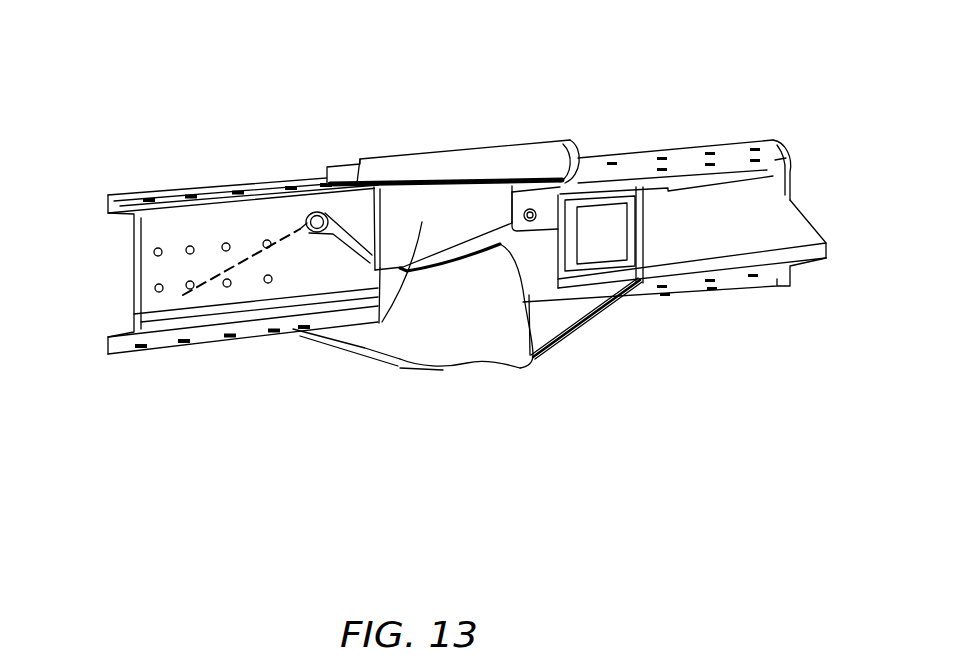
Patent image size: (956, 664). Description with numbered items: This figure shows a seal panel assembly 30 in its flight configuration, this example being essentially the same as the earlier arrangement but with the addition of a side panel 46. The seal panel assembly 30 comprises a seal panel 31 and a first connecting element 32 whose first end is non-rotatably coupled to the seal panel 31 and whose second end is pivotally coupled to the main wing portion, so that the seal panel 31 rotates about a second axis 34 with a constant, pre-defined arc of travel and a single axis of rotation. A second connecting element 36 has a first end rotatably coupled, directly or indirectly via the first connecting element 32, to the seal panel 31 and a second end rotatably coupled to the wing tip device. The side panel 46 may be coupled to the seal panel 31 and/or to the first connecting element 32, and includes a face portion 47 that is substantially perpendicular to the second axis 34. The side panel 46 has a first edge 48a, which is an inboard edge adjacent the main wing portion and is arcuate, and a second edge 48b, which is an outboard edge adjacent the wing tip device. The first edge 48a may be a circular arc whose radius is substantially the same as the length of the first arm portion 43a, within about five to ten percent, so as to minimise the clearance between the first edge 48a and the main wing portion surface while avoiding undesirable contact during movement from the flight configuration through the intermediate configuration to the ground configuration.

The seal panel assembly 30 is at (466, 133).
The seal panel 31 is at (440, 167).
The first connecting element 32 is at (268, 343).
The second axis 34 is at (172, 351).
The second connecting element 36 is at (528, 290).
The first arm portion 43a is at (300, 230).
The side panel 46 is at (342, 238).
The face portion 47 is at (470, 215).
The first edge 48a is at (375, 223).
The second edge 48b is at (513, 193).